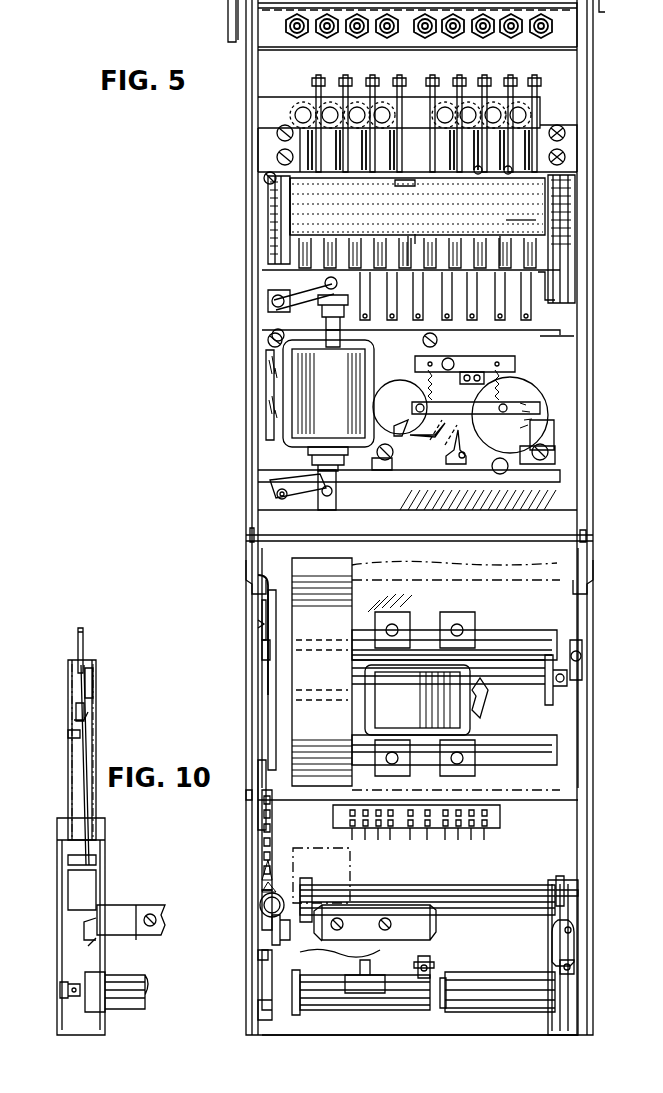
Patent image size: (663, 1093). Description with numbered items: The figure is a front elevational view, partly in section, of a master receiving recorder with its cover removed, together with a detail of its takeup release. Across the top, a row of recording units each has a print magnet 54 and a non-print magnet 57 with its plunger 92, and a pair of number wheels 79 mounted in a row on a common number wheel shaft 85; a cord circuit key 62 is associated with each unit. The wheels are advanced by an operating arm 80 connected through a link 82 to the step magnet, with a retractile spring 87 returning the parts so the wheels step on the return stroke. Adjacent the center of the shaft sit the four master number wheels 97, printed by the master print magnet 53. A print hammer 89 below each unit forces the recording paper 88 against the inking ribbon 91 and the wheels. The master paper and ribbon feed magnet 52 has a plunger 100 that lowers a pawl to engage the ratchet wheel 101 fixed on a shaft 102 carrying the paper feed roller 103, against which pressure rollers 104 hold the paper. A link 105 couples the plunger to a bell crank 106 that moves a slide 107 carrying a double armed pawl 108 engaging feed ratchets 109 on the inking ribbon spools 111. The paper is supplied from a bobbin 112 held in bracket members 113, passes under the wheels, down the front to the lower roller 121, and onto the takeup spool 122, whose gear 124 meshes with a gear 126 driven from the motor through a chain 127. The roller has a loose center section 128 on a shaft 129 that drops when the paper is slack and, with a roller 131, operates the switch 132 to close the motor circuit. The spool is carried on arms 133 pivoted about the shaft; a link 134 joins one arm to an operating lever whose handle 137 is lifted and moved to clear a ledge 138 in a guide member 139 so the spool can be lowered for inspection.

In FIG. 5, the master paper and ribbon feed magnet 52 is at (320, 405).
In FIG. 5, the master print magnet 53 is at (412, 244).
In FIG. 5, the print magnet 54 is at (538, 270).
In FIG. 5, the non-print magnet 57 is at (417, 134).
In FIG. 5, the cord circuit key 62 is at (530, 38).
In FIG. 5, the number wheels 79 is at (512, 166).
In FIG. 5, the operating arm 80 is at (321, 86).
In FIG. 5, the link 82 is at (410, 80).
In FIG. 5, the number wheel shaft 85 is at (559, 141).
In FIG. 5, the retractile spring 87 is at (406, 82).
In FIG. 5, the recording paper 88 is at (336, 200).
In FIG. 5, the print hammer 89 is at (402, 186).
In FIG. 5, the inking ribbon 91 is at (548, 338).
In FIG. 5, the plunger 92 is at (304, 108).
In FIG. 5, the master number wheels 97 is at (422, 218).
In FIG. 5, the plunger 100 is at (326, 330).
In FIG. 5, the ratchet wheel 101 is at (286, 193).
In FIG. 5, the shaft 102 is at (272, 210).
In FIG. 5, the paper feed roller 103 is at (520, 213).
In FIG. 5, the pressure rollers 104 is at (505, 244).
In FIG. 5, the link 105 is at (331, 498).
In FIG. 5, the bell crank 106 is at (302, 504).
In FIG. 5, the slide 107 is at (529, 464).
In FIG. 5, the double armed pawl 108 is at (434, 452).
In FIG. 5, the feed ratchets 109 is at (416, 406).
In FIG. 5, the inking ribbon spools 111 is at (426, 382).
In FIG. 5, the bobbin 112 is at (536, 692).
In FIG. 5, the bracket members 113 is at (595, 582).
In FIG. 5, the roller 121 is at (436, 1034).
In FIG. 10, the roller 121 is at (120, 1010).
In FIG. 5, the takeup spool 122 is at (450, 898).
In FIG. 5, the gear 124 is at (274, 925).
In FIG. 5, the gear 126 is at (276, 870).
In FIG. 5, the chain 127 is at (260, 820).
In FIG. 5, the center section 128 is at (436, 978).
In FIG. 5, the shaft 129 is at (394, 976).
In FIG. 10, the shaft 129 is at (68, 990).
In FIG. 5, the roller 131 is at (430, 961).
In FIG. 5, the switch 132 is at (369, 900).
In FIG. 5, the arms 133 is at (280, 963).
In FIG. 10, the arms 133 is at (98, 938).
In FIG. 5, the link 134 is at (266, 763).
In FIG. 10, the link 134 is at (86, 802).
In FIG. 10, the handle 137 is at (82, 640).
In FIG. 10, the ledge 138 is at (80, 712).
In FIG. 5, the guide member 139 is at (268, 830).
In FIG. 10, the guide member 139 is at (92, 734).